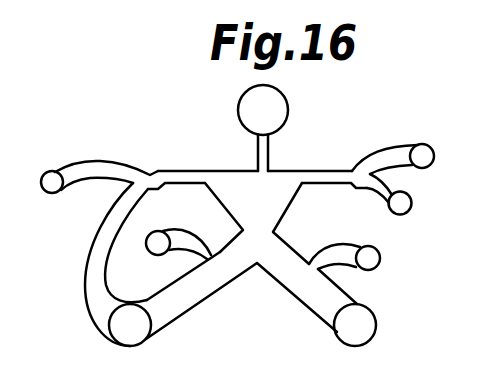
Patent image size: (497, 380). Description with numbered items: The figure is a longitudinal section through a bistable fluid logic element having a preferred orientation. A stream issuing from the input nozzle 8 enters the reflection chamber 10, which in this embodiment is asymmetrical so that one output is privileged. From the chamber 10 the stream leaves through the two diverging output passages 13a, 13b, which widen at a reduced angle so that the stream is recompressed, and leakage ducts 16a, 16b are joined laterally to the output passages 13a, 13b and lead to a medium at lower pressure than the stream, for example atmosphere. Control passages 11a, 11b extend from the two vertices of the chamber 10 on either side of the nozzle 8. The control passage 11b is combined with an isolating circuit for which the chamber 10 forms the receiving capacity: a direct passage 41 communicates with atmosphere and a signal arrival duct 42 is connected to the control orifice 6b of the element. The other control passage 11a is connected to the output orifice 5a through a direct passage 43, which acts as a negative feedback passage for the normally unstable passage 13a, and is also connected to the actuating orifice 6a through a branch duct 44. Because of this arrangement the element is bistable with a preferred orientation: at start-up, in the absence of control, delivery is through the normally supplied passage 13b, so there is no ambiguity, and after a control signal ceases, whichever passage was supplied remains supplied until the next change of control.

The input nozzle 8 is at (259, 152).
The actuating orifice 6a is at (51, 171).
The control orifice 6b is at (426, 147).
The branch duct 44 is at (105, 173).
The signal arrival duct 42 is at (390, 158).
The direct passage 41 is at (380, 186).
The direct passage 43 is at (86, 263).
The control passage 11a is at (175, 177).
The control passage 11b is at (325, 177).
The reflection chamber 10 is at (257, 223).
The leakage duct 16a is at (177, 238).
The leakage duct 16b is at (337, 252).
The output passage 13a is at (199, 286).
The output passage 13b is at (312, 298).
The output orifice 5a is at (119, 328).